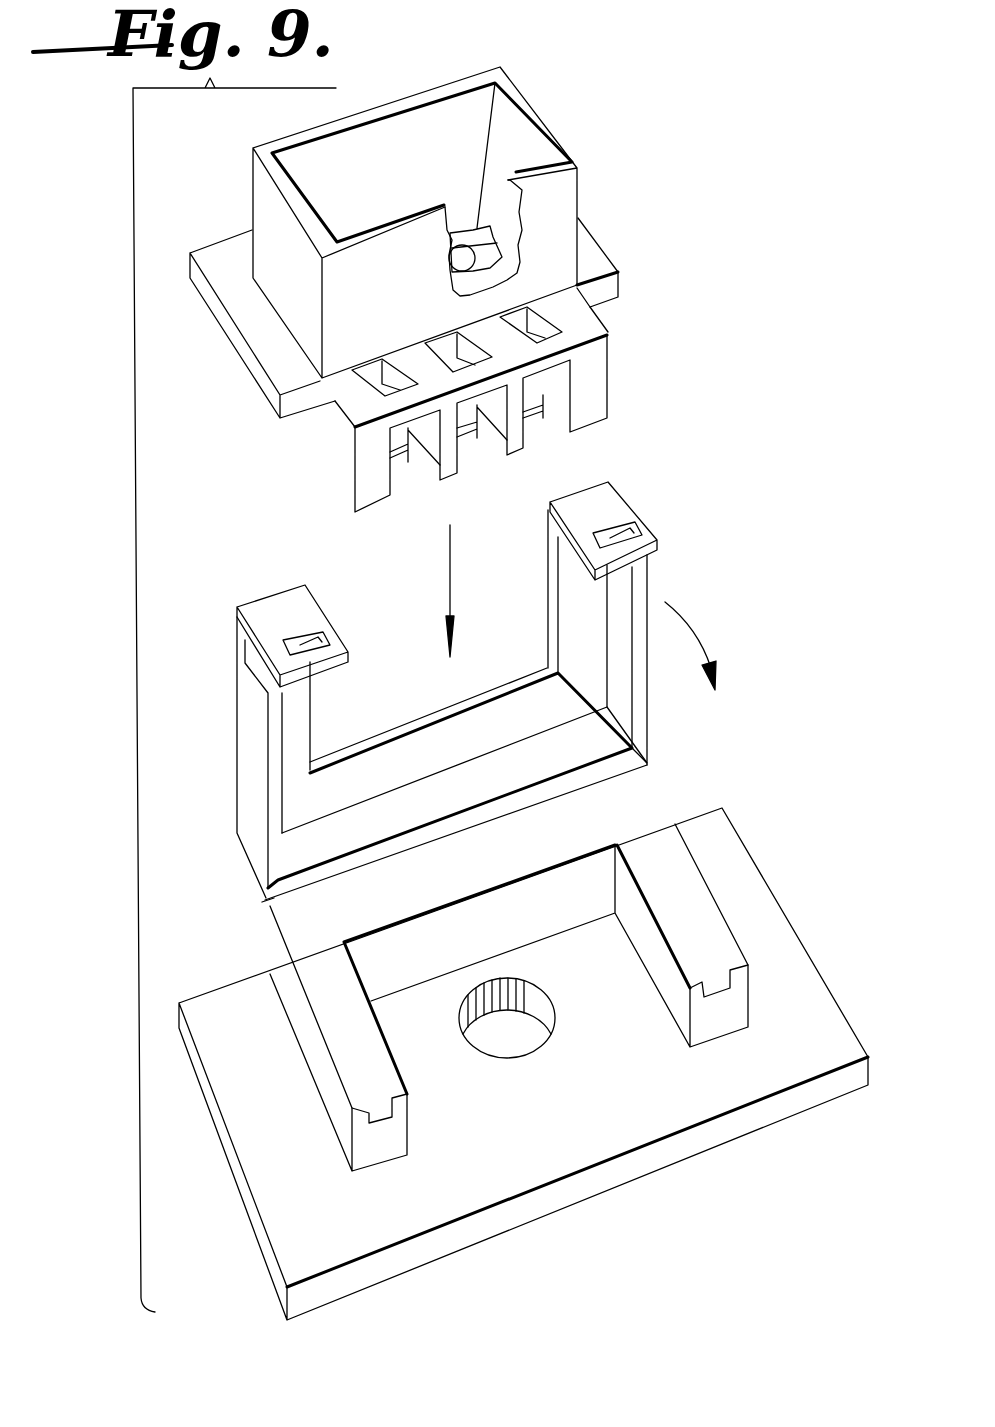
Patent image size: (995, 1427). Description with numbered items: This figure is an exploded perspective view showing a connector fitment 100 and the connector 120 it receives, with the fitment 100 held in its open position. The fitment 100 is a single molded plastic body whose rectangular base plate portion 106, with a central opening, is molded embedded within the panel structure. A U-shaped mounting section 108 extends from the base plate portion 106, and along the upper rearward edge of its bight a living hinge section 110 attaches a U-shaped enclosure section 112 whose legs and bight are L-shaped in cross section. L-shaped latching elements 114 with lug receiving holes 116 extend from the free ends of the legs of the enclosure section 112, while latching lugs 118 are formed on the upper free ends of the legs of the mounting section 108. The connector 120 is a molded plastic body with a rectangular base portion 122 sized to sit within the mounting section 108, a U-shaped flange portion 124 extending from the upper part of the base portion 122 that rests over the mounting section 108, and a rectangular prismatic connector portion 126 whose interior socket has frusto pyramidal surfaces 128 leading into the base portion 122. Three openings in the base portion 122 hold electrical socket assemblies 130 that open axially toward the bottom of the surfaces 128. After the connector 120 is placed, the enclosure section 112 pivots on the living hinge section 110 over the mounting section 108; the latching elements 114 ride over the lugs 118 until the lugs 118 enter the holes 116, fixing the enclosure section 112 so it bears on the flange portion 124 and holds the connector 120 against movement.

The connector fitment 100 is at (513, 1032).
The base plate portion 106 is at (492, 1226).
The U-shaped mounting section 108 is at (528, 997).
The living hinge section 110 is at (266, 902).
The U-shaped enclosure section 112 is at (453, 689).
The L-shaped latching elements 114 is at (308, 613).
The lug receiving holes 116 is at (326, 647).
The latching lugs 118 is at (372, 1117).
The connector 120 is at (459, 289).
The base portion 122 is at (338, 457).
The U-shaped flange portion 124 is at (254, 366).
The connector portion 126 is at (398, 222).
The frusto pyramidal surfaces 128 is at (512, 147).
The electrical socket assemblies 130 is at (461, 244).